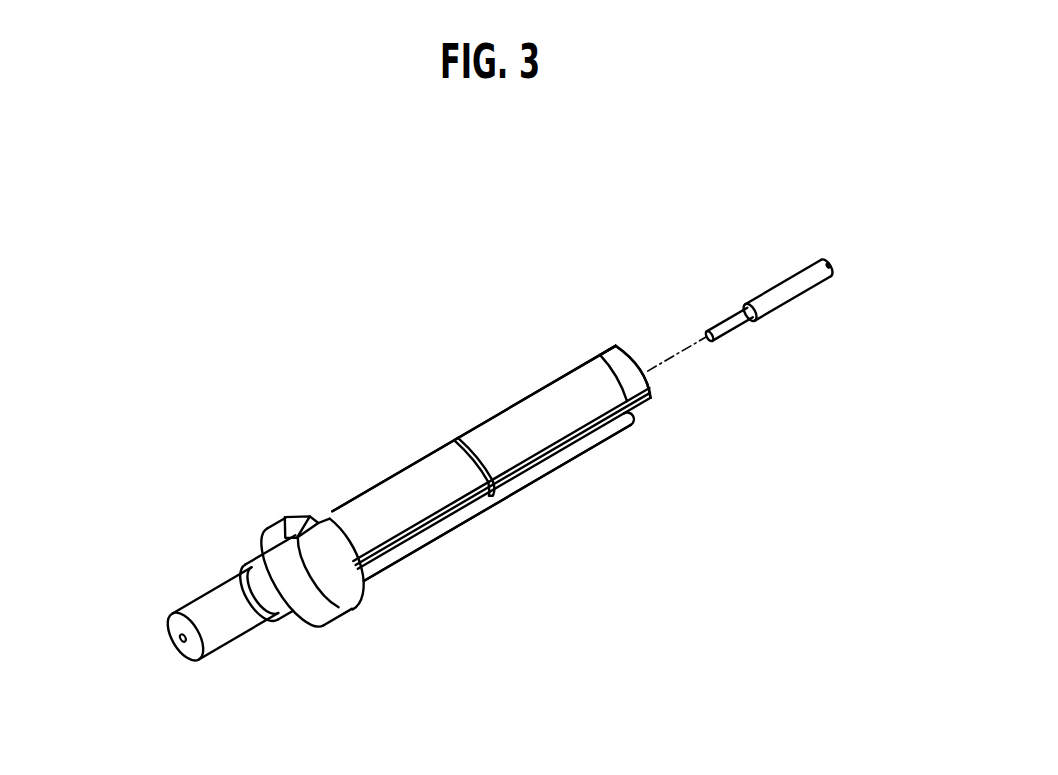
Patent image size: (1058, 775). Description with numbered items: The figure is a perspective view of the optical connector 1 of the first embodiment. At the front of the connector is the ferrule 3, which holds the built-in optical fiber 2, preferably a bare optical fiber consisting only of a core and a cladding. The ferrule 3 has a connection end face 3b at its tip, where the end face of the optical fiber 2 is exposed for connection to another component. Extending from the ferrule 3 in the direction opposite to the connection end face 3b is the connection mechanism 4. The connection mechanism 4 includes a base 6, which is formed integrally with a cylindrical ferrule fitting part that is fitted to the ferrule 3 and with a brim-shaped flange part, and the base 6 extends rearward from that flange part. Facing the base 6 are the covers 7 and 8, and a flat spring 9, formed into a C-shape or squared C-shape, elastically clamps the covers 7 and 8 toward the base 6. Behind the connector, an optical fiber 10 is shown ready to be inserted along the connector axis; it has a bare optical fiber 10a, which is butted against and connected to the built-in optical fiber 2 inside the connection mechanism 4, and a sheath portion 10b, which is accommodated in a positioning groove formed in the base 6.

The optical connector 1 is at (403, 390).
The optical fiber 2 is at (183, 645).
The ferrule 3 is at (222, 598).
The connection end face 3b is at (171, 627).
The connection mechanism 4 is at (498, 481).
The base 6 is at (648, 406).
The cover 7 is at (392, 533).
The cover 8 is at (617, 365).
The flat spring 9 is at (512, 423).
The optical fiber 10 is at (667, 200).
The optical fiber 10a is at (730, 322).
The sheath portion 10b is at (800, 282).